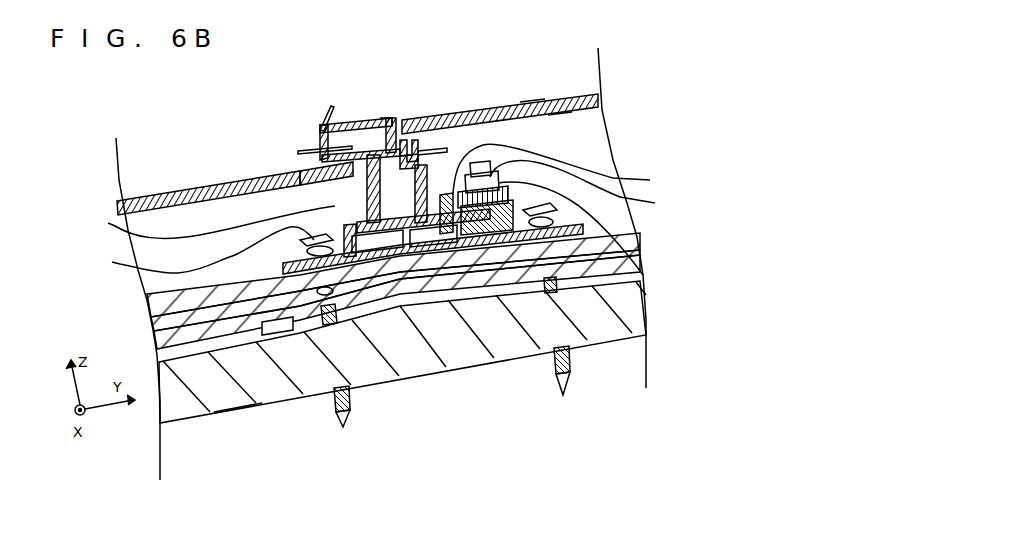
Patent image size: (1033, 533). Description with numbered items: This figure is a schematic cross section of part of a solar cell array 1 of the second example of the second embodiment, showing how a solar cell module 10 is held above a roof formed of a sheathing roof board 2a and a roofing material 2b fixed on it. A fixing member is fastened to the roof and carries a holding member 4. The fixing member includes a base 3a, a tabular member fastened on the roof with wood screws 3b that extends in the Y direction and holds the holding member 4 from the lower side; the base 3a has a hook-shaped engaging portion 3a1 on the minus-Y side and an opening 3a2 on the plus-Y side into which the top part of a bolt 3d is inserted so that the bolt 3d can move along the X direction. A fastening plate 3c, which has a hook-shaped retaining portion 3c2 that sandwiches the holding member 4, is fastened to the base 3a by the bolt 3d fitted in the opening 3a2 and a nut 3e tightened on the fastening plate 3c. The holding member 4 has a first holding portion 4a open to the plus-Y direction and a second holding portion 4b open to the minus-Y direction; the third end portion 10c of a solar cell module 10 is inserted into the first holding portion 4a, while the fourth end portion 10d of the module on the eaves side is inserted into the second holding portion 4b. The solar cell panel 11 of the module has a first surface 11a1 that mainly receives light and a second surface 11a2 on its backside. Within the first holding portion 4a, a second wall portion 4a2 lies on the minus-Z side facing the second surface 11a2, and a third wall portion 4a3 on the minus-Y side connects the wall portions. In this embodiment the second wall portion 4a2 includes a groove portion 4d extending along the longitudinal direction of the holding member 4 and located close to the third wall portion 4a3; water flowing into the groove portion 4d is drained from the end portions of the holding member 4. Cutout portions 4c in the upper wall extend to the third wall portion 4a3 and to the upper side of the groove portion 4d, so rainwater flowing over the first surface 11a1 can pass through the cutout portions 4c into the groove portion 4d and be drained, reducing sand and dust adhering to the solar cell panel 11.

The solar cell array 1 is at (601, 360).
The sheathing roof board 2a is at (277, 363).
The roofing material 2b is at (226, 292).
The base 3a is at (407, 240).
The engaging portion 3a1 is at (202, 222).
The opening 3a2 is at (500, 215).
The wood screws 3b is at (697, 280).
The fastening plate 3c is at (450, 213).
The retaining portion 3c2 is at (562, 189).
The bolt 3d is at (589, 194).
The nut 3e is at (600, 232).
The holding member 4 is at (333, 133).
The first holding portion 4a is at (372, 133).
The second wall portion 4a2 is at (440, 160).
The third wall portion 4a3 is at (378, 125).
The second holding portion 4b is at (320, 154).
The cutout portions 4c is at (392, 118).
The groove portion 4d is at (327, 130).
The solar cell module 10 is at (186, 182).
The third end portion 10c is at (420, 142).
The fourth end portion 10d is at (288, 172).
The solar cell panel 11 is at (562, 99).
The first surface 11a1 is at (532, 102).
The second surface 11a2 is at (560, 114).